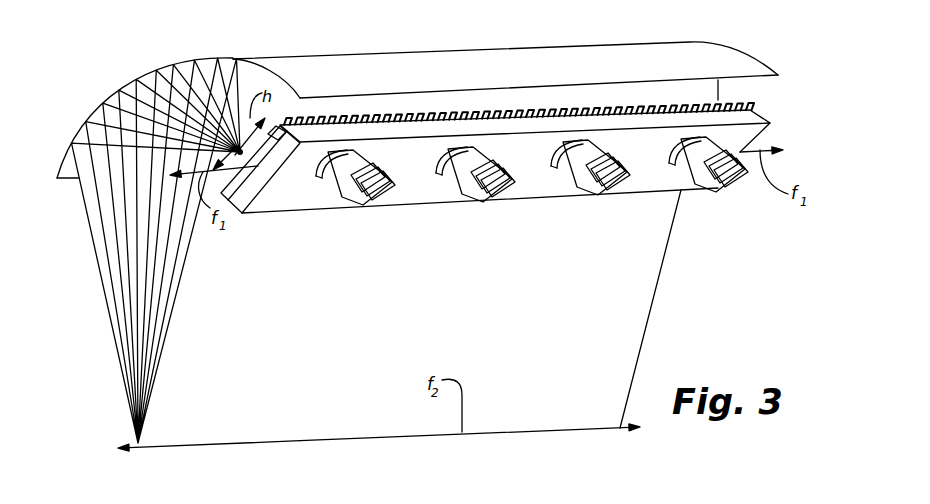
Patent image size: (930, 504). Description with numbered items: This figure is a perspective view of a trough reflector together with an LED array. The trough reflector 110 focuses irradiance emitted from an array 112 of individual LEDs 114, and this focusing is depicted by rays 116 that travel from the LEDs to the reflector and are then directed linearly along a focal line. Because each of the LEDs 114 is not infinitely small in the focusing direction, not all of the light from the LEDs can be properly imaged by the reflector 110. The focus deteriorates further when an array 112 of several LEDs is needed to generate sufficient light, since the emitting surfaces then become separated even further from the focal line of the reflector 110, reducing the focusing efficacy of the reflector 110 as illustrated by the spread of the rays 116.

The trough reflector 110 is at (720, 50).
The array 112 is at (653, 173).
The LEDs 114 is at (240, 208).
The rays 116 is at (122, 282).